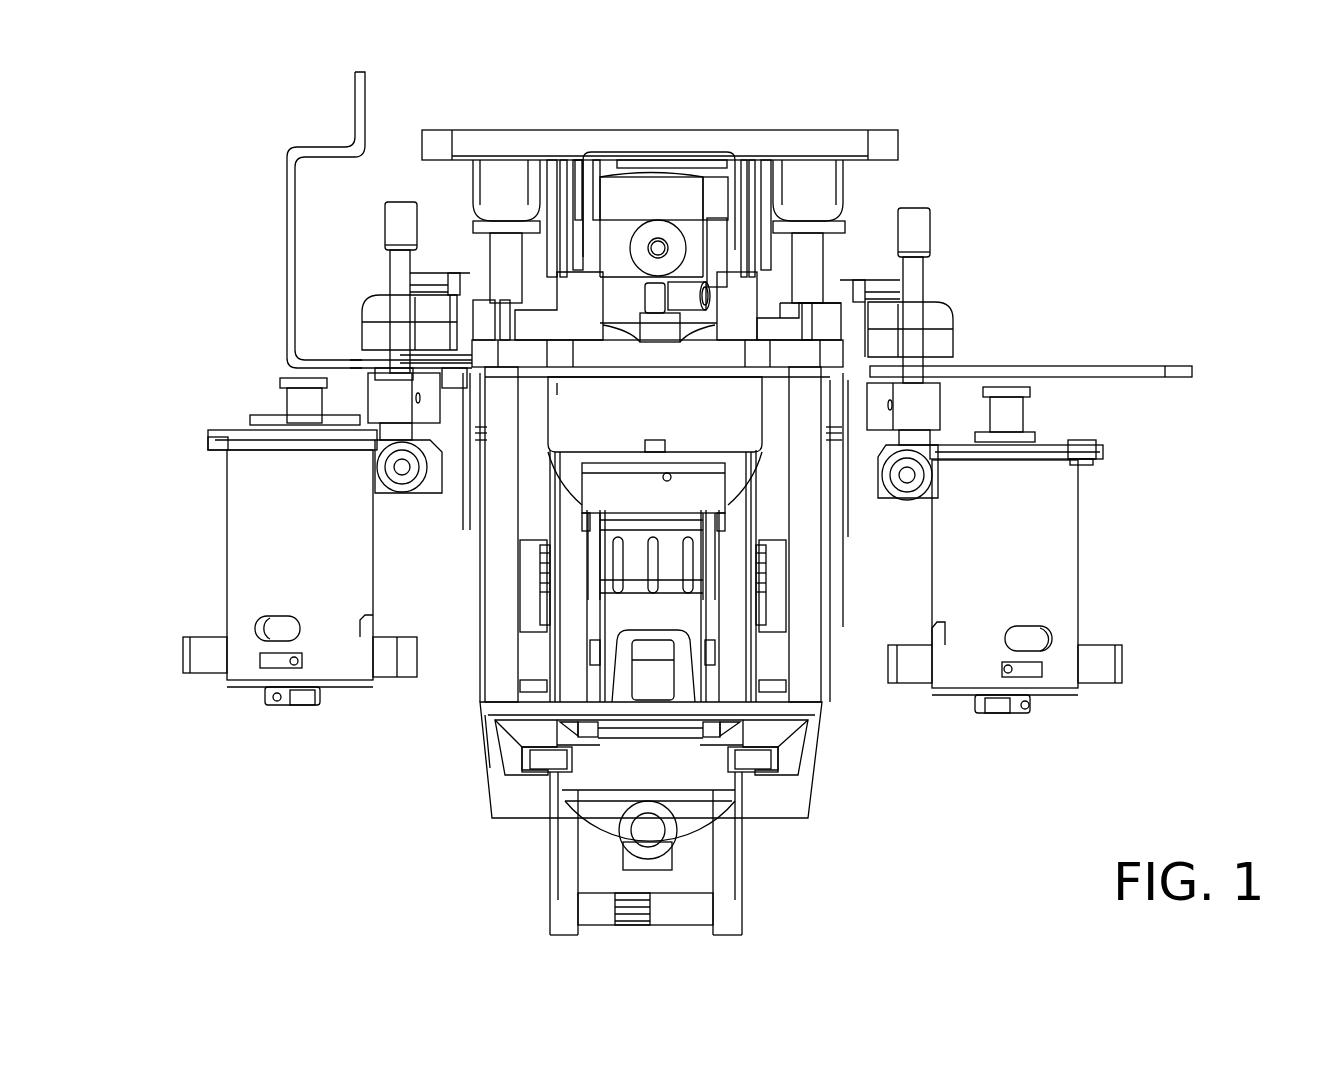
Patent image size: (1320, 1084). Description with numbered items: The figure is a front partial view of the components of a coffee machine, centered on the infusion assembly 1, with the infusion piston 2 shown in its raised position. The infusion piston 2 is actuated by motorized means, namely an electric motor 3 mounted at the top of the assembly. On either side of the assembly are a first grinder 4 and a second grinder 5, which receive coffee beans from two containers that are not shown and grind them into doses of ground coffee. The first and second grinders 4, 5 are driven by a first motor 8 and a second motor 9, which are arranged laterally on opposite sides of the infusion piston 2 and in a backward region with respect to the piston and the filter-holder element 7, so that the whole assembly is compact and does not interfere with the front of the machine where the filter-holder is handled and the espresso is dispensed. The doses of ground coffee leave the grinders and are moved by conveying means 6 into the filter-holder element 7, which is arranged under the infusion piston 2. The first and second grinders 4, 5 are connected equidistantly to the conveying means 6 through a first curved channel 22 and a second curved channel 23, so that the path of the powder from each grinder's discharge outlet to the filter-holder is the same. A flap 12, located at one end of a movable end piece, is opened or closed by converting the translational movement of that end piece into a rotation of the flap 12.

The infusion assembly 1 is at (1068, 213).
The infusion piston 2 is at (580, 427).
The electric motor 3 is at (670, 178).
The first grinder 4 is at (373, 317).
The second grinder 5 is at (937, 327).
The conveying means 6 is at (540, 651).
The filter-holder element 7 is at (692, 798).
The first motor 8 is at (277, 547).
The second motor 9 is at (1043, 548).
The flap 12 is at (680, 603).
The first curved channel 22 is at (605, 317).
The second curved channel 23 is at (698, 318).